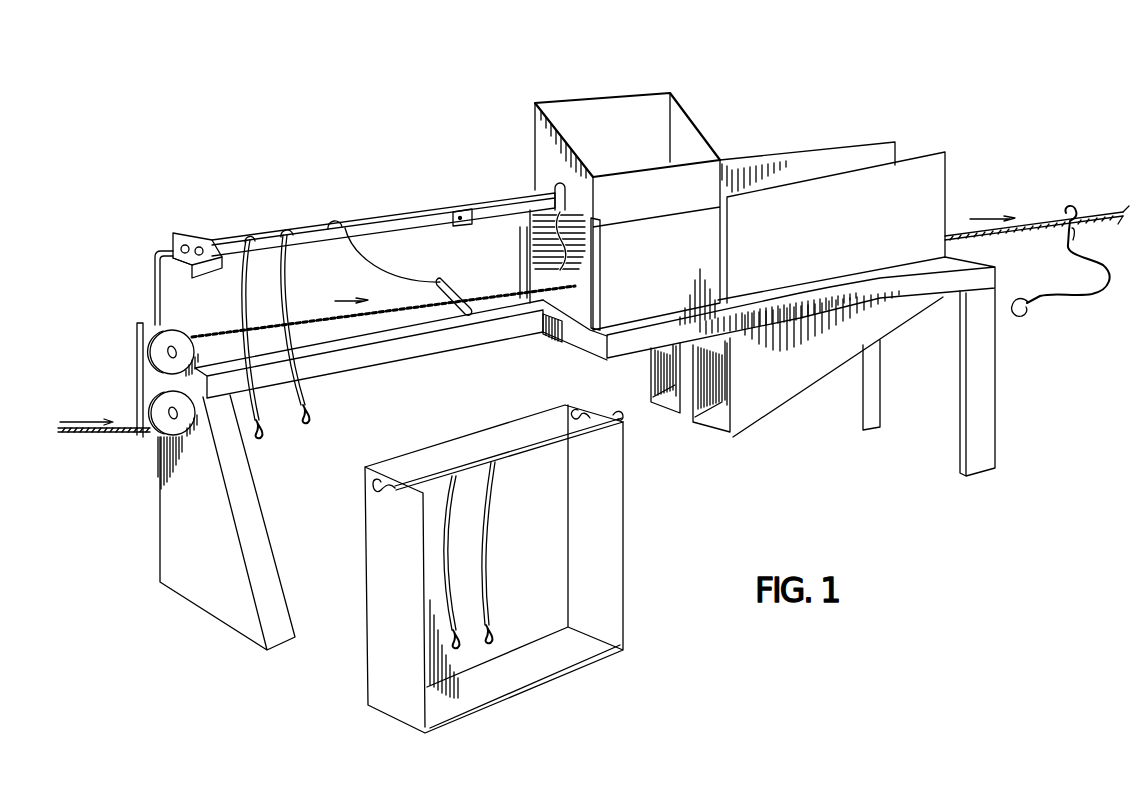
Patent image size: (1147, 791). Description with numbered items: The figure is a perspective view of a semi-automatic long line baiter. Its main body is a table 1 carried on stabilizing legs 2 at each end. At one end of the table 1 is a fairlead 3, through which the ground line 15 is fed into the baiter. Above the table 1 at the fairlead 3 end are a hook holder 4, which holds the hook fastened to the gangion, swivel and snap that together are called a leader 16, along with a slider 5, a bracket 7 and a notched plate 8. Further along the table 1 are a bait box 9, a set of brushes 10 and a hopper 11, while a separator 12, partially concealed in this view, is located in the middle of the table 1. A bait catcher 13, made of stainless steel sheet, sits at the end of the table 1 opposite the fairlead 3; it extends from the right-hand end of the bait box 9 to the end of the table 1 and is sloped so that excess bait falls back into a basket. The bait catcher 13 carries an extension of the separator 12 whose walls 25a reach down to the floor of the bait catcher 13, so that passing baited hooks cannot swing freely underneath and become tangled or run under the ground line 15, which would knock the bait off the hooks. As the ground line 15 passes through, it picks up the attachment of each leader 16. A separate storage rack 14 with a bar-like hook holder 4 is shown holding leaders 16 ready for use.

The table 1 is at (992, 280).
The stabilizing legs 2 is at (160, 560).
The fairlead 3 is at (138, 390).
The hook holder 4 is at (368, 222).
The slider 5 is at (470, 207).
The bracket 7 is at (155, 258).
The notched plate 8 is at (185, 232).
The bait box 9 is at (590, 347).
The set of brushes 10 is at (540, 200).
The hopper 11 is at (698, 124).
The separator 12 is at (557, 335).
The bait catcher 13 is at (777, 158).
The storage rack 14 is at (623, 528).
The ground line 15 is at (108, 437).
The leader 16 is at (308, 417).
The walls of the separator extension 25a is at (651, 386).